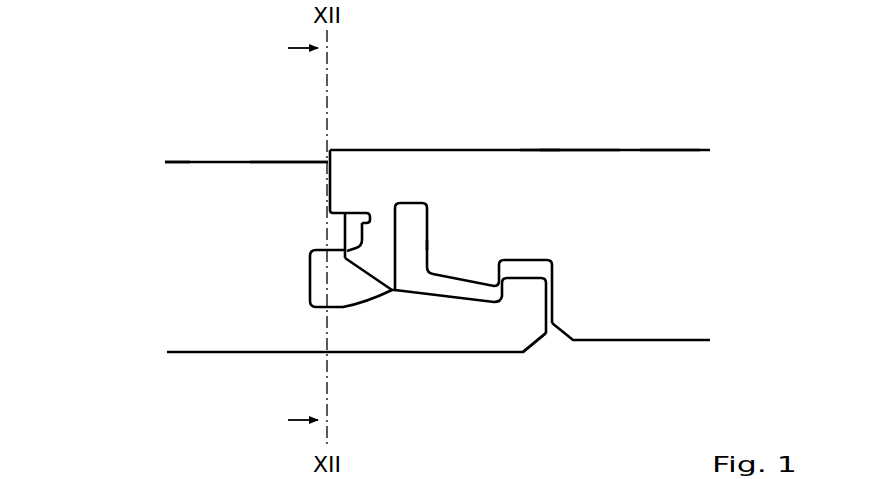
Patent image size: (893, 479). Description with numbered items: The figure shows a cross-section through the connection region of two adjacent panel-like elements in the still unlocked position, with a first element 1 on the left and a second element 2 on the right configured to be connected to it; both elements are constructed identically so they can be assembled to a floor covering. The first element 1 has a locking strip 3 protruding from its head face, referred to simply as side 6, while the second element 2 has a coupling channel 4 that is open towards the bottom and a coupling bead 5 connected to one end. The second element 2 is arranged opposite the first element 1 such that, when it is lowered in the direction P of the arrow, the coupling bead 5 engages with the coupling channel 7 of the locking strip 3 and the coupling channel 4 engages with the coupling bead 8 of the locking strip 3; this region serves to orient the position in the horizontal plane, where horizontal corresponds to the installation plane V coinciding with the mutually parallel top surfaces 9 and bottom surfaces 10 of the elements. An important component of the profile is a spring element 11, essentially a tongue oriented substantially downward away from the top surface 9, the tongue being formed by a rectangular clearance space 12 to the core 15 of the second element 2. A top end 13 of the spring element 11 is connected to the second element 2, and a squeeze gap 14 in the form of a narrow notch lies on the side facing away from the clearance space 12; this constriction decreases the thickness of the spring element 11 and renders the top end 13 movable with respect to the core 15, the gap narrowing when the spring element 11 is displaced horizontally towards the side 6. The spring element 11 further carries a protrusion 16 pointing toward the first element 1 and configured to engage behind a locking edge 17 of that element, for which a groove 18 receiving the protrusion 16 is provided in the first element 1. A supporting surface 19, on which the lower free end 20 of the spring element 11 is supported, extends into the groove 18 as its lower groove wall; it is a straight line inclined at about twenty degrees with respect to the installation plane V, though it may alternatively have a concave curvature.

The first element 1 is at (292, 172).
The second element 2 is at (580, 162).
The locking strip 3 is at (461, 331).
The coupling channel 4 is at (538, 268).
The coupling bead 5 is at (500, 275).
The side 6 is at (333, 157).
The coupling channel 7 is at (498, 309).
The coupling bead 8 is at (531, 303).
The top surface 9 is at (230, 155).
The bottom surface 10 is at (238, 354).
The spring element 11 is at (372, 247).
The clearance space 12 is at (413, 212).
The top end 13 is at (384, 209).
The squeeze gap 14 is at (368, 203).
The core 15 is at (683, 266).
The protrusion 16 is at (343, 257).
The locking edge 17 is at (330, 250).
The groove 18 is at (367, 292).
The supporting surface 19 is at (340, 300).
The lower free end 20 is at (393, 291).
The direction of the arrow P is at (540, 133).
The installation plane V is at (192, 162).